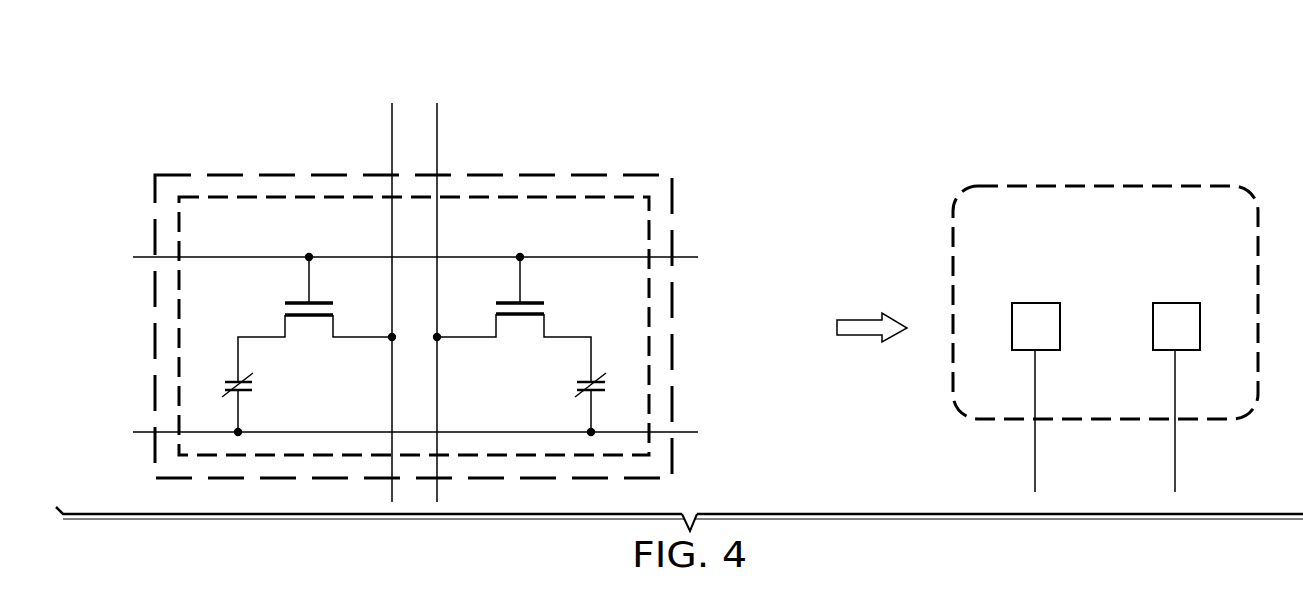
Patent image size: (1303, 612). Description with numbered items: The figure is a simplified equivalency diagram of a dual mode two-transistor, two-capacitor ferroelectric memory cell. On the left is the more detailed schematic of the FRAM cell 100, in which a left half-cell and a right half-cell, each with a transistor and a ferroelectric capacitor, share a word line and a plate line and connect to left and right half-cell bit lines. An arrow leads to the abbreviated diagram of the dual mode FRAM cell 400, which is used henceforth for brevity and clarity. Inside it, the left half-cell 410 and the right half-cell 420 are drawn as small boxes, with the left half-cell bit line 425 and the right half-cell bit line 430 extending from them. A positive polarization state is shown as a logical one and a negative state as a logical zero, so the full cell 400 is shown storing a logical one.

The 2T/2C FRAM cell 100 is at (306, 80).
The dual mode 2T/2C FRAM cell 400 is at (1161, 142).
The left half-cell 410 is at (1040, 350).
The right half-cell 420 is at (1180, 350).
The left half-cell bit line 425 is at (1035, 457).
The right half-cell bit line 430 is at (1175, 462).